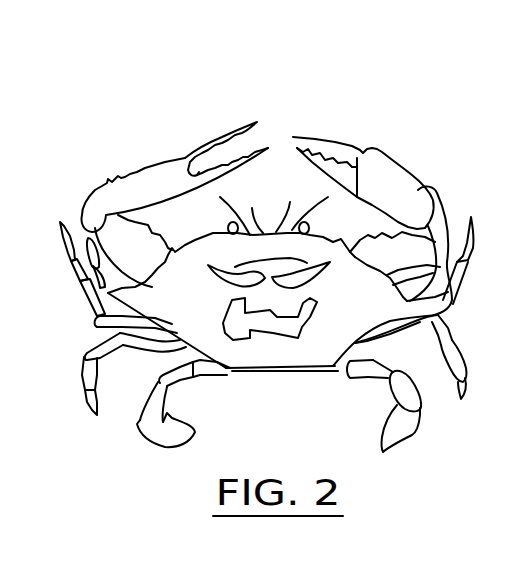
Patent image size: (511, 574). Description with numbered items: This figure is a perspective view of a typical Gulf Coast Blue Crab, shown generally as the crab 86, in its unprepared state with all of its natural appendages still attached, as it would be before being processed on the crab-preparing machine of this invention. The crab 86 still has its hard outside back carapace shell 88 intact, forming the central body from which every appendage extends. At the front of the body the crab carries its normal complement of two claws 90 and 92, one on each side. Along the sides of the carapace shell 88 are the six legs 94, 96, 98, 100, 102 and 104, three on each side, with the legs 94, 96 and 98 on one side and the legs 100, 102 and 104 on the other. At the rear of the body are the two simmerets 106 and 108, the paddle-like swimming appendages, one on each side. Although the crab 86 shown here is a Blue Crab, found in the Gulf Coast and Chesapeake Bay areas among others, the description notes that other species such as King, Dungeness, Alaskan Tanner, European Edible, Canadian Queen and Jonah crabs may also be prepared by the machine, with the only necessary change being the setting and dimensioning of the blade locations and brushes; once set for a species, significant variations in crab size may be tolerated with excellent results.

The crab 86 is at (341, 108).
The carapace shell 88 is at (275, 350).
The claw 90 is at (138, 193).
The claw 92 is at (392, 183).
The leg 94 is at (80, 237).
The leg 96 is at (72, 265).
The leg 98 is at (77, 378).
The leg 100 is at (447, 253).
The leg 102 is at (482, 258).
The leg 104 is at (462, 353).
The simmeret 106 is at (160, 437).
The simmeret 108 is at (405, 428).